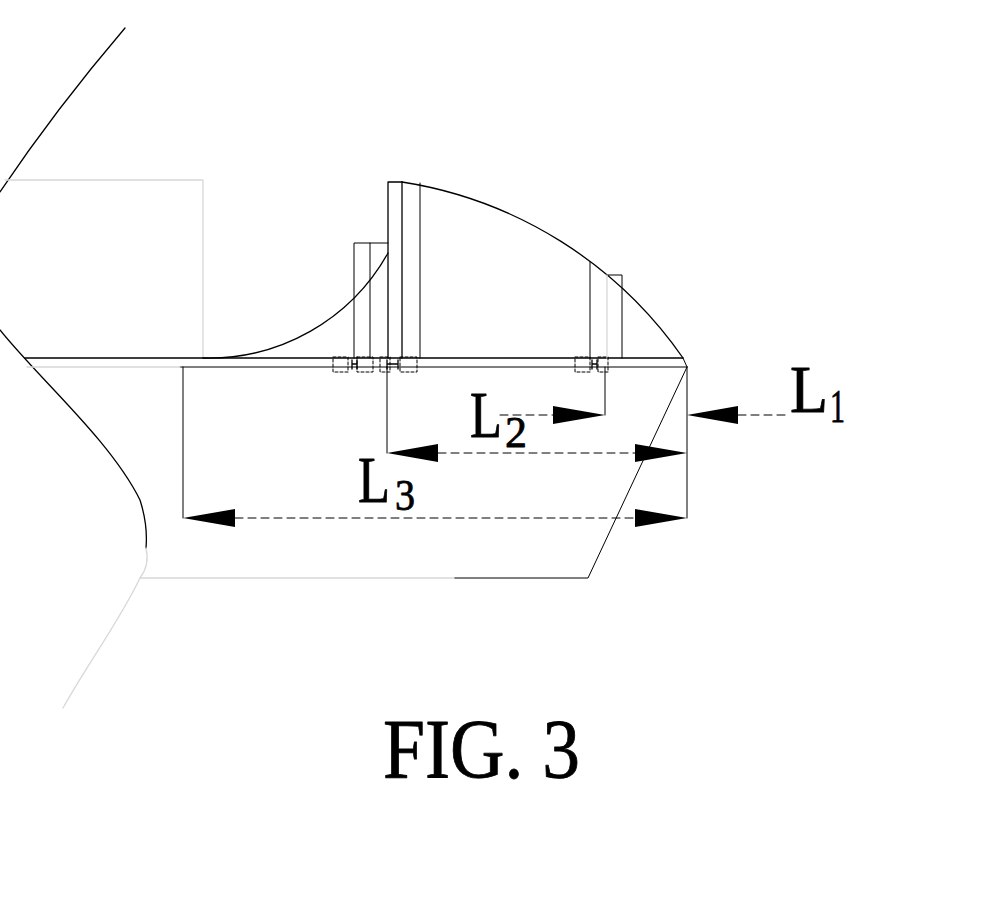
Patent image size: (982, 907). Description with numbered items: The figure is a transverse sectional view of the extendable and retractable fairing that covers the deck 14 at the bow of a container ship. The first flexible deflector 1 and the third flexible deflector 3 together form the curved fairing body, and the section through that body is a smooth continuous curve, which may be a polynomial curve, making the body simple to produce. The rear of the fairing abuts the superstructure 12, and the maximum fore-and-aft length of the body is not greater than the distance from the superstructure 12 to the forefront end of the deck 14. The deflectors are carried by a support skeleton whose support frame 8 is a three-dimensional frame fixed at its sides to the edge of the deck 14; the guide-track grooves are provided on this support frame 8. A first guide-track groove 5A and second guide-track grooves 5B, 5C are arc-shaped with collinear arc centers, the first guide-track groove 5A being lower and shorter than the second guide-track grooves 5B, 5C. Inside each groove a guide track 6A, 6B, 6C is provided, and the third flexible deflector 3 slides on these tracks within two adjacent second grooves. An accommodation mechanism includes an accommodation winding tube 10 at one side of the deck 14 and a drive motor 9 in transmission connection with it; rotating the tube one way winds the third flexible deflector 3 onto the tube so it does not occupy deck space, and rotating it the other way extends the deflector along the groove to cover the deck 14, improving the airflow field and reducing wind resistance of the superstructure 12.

The first flexible deflector 1 is at (652, 337).
The third flexible deflector 3 is at (333, 338).
The first guide-track groove 5A is at (354, 243).
The second guide-track groove 5B is at (388, 182).
The second guide-track groove 5C is at (590, 262).
The first boundary line 6A is at (370, 260).
The second boundary line 6B is at (402, 182).
The third boundary line 6C is at (607, 275).
The support frame 8 is at (537, 277).
The drive motor 9 is at (415, 362).
The accommodation winding tube 10 is at (378, 372).
The superstructure 12 is at (123, 237).
The deck 14 is at (287, 362).